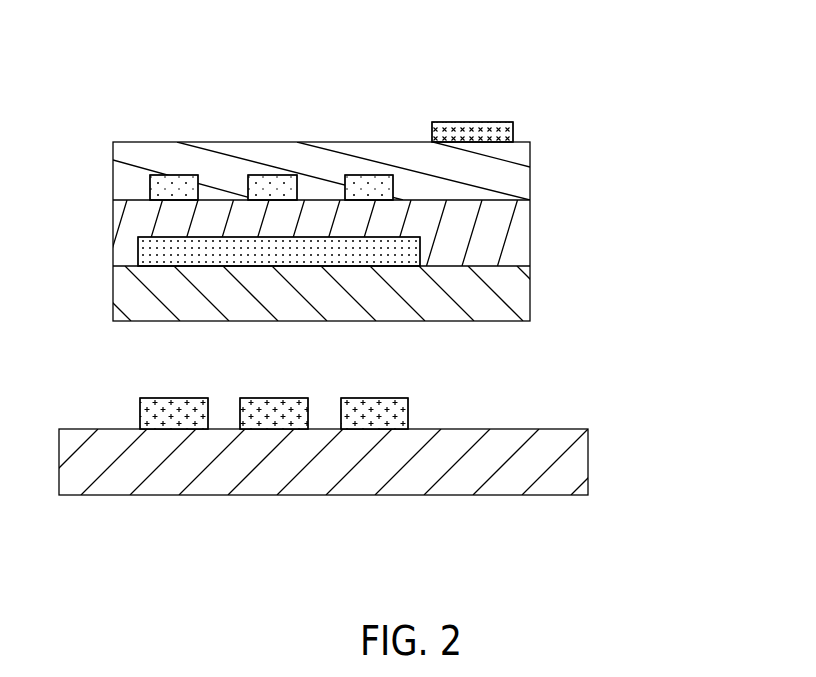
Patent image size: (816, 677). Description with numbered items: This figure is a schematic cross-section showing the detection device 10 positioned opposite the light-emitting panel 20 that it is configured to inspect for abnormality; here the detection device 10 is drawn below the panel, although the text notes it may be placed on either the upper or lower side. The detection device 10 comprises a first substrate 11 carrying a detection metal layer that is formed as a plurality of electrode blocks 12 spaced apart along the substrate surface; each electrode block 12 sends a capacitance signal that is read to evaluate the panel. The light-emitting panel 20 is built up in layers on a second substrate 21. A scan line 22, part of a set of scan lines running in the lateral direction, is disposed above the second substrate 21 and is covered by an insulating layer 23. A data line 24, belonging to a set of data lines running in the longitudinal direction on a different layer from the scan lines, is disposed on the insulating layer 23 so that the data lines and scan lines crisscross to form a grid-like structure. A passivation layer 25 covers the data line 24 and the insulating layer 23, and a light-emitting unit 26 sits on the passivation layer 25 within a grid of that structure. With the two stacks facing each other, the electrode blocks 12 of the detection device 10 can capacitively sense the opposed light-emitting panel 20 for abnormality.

The detection device 10 is at (379, 505).
The first substrate 11 is at (578, 455).
The electrode block 12 is at (272, 418).
The light-emitting panel 20 is at (388, 177).
The second substrate 21 is at (518, 306).
The scan line 22 is at (240, 253).
The insulating layer 23 is at (495, 228).
The data line 24 is at (372, 188).
The passivation layer 25 is at (495, 182).
The light-emitting unit 26 is at (468, 122).